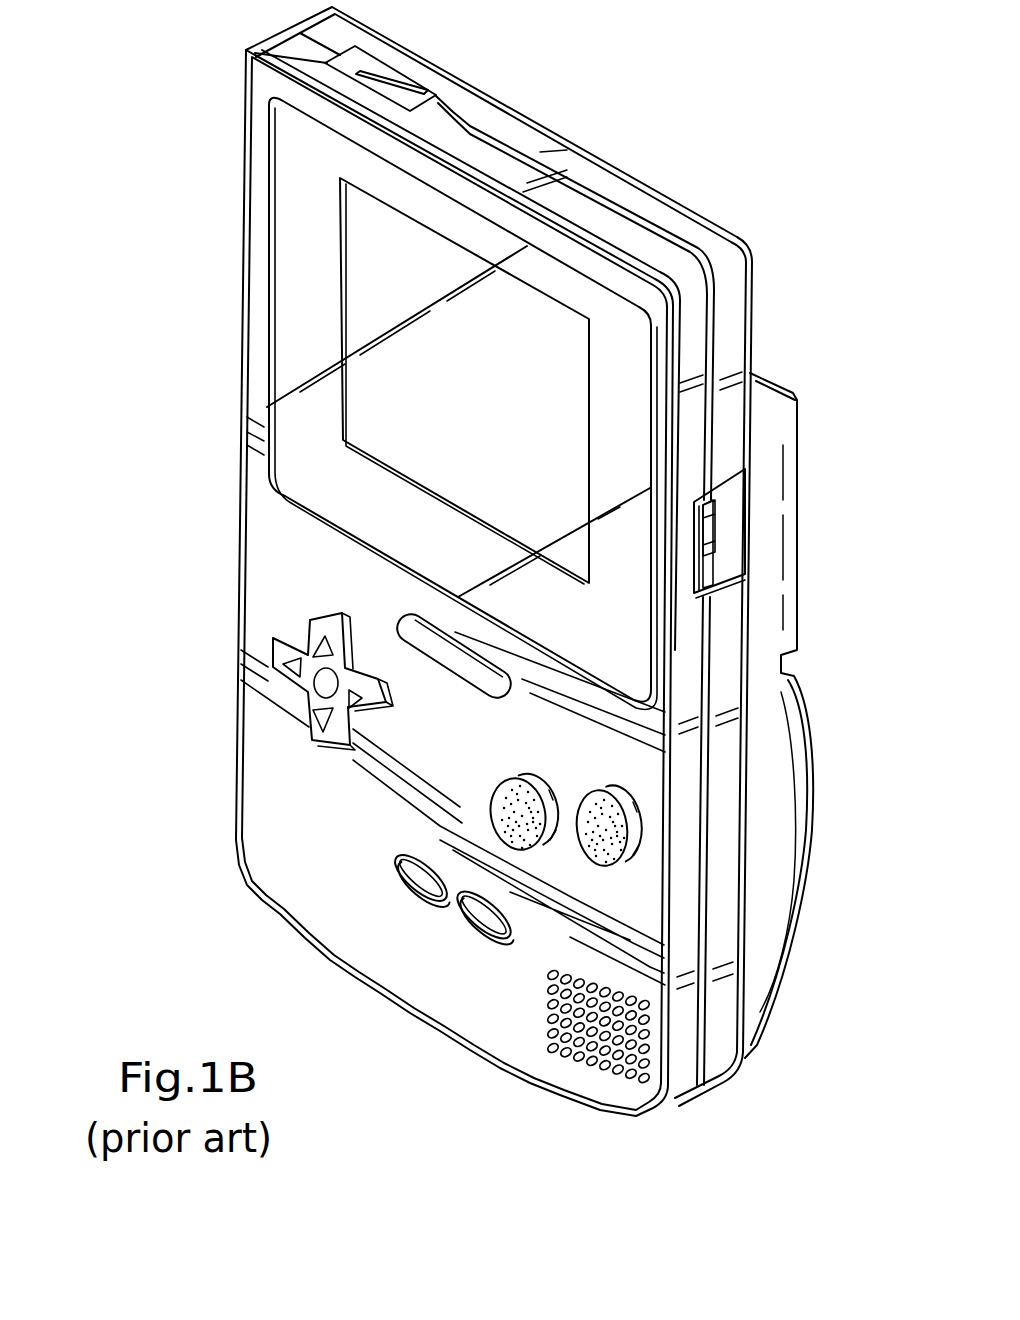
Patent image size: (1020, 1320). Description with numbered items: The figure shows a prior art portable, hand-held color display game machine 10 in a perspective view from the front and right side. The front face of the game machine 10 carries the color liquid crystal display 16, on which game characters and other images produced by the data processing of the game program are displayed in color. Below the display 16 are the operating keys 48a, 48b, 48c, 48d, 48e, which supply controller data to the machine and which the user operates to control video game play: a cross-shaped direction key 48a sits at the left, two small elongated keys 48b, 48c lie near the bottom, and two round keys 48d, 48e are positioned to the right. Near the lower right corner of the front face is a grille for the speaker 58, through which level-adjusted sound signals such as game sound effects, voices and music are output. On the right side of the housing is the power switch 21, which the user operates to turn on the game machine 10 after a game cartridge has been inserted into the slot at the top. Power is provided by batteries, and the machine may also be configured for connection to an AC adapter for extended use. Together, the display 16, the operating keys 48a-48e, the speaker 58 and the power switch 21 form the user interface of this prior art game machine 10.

The game machine 10 is at (222, 584).
The color liquid crystal display 16 is at (365, 320).
The power switch 21 is at (716, 545).
The operating key 48a is at (291, 630).
The operating key 48b is at (413, 891).
The operating key 48c is at (481, 931).
The operating key 48d is at (532, 777).
The operating key 48e is at (578, 797).
The speaker 58 is at (617, 1062).